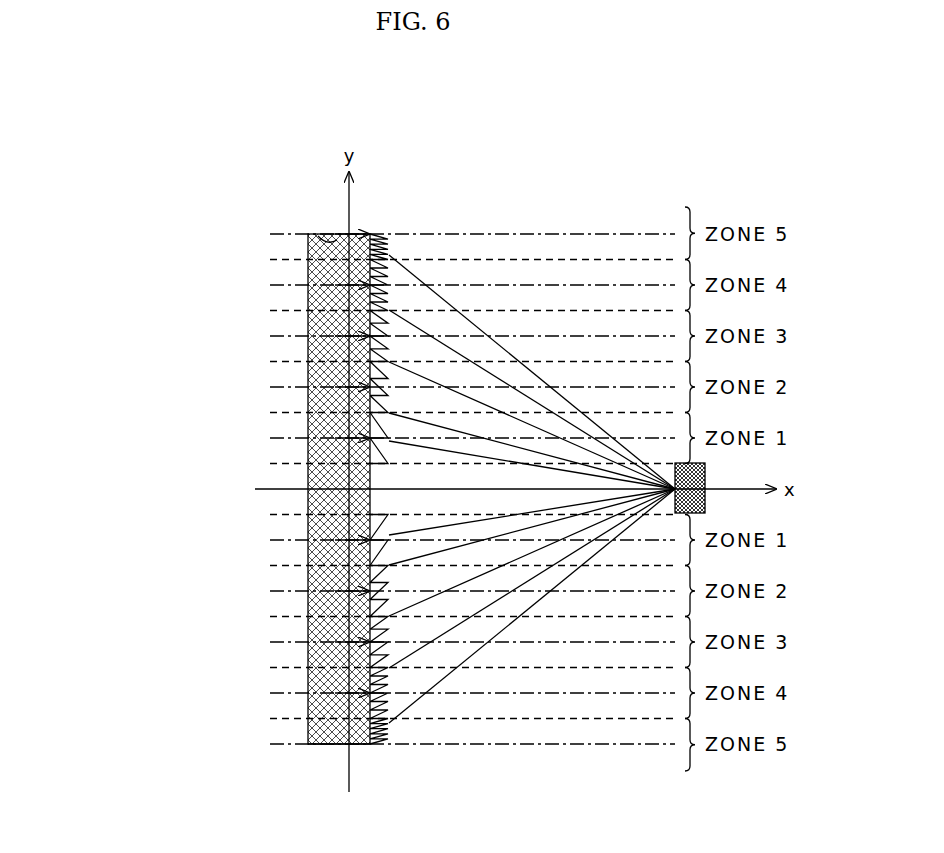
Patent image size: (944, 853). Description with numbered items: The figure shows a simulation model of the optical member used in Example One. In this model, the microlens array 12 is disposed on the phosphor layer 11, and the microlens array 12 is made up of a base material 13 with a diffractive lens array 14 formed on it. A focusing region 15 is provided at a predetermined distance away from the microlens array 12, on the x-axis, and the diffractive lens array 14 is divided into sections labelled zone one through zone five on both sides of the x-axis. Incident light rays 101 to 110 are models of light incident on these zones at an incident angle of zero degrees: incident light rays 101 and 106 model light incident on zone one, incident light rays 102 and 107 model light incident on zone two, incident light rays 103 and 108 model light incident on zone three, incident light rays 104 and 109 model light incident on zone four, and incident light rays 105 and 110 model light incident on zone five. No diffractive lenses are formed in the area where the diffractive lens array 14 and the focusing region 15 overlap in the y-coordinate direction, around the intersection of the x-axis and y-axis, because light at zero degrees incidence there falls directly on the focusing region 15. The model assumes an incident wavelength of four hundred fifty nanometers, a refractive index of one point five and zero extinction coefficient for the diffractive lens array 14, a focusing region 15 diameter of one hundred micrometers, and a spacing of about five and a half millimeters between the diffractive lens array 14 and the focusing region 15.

The phosphor layer 11 is at (326, 238).
The microlens array 12 is at (372, 442).
The base material 13 is at (356, 237).
The diffractive lens array 14 is at (372, 231).
The focusing region 15 is at (705, 471).
The incident light ray 101 is at (337, 438).
The incident light ray 102 is at (337, 387).
The incident light ray 103 is at (337, 336).
The incident light ray 104 is at (337, 285).
The incident light ray 105 is at (336, 241).
The incident light ray 106 is at (338, 540).
The incident light ray 107 is at (338, 591).
The incident light ray 108 is at (338, 642).
The incident light ray 109 is at (338, 693).
The incident light ray 110 is at (348, 738).